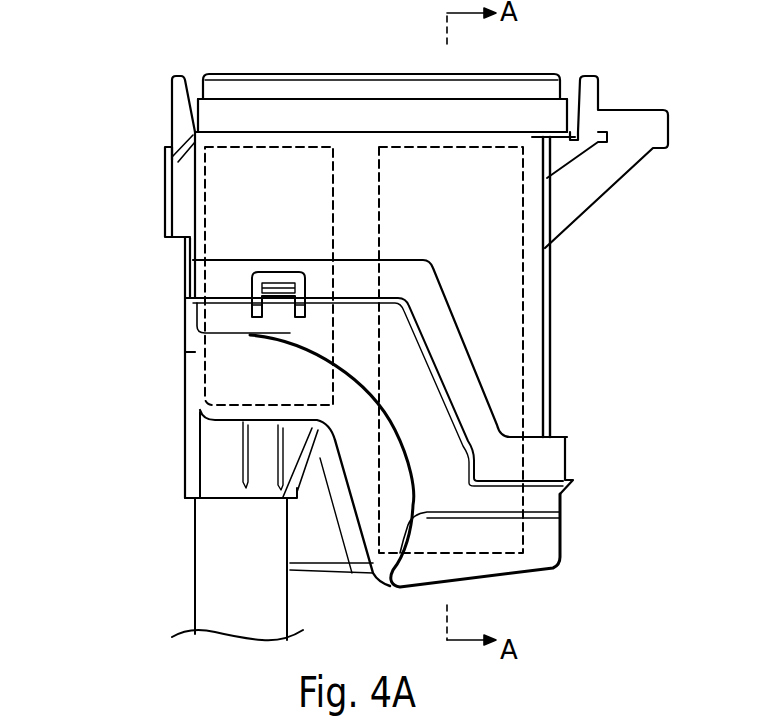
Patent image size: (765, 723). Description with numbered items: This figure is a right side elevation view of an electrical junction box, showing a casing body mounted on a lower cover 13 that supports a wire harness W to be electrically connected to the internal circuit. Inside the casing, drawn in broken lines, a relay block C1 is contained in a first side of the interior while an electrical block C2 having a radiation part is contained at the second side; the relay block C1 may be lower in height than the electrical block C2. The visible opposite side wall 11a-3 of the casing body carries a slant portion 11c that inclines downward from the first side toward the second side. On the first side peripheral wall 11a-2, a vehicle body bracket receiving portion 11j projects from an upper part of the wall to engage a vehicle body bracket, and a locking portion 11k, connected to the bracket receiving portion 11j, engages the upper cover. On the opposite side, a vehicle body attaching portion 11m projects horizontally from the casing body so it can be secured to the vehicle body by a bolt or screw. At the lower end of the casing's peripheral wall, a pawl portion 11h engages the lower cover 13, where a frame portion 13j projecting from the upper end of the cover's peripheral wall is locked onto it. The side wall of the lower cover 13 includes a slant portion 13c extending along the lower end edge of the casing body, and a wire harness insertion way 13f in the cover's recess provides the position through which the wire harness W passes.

The locking portion 11k is at (173, 104).
The vehicle body bracket receiving portion 11j is at (177, 203).
The relay block C1 is at (205, 172).
The first side peripheral wall 11a-2 is at (180, 248).
The slant portion 11c is at (475, 420).
The pawl portion 11h is at (277, 300).
The frame portion 13j is at (257, 296).
The opposite side wall 11a-3 is at (545, 252).
The vehicle body attaching portion 11m is at (598, 173).
The electrical block C2 is at (535, 198).
The lower cover 13 is at (540, 545).
The wire harness insertion way 13f is at (220, 463).
The slant portion 13c is at (358, 527).
The wire harness W is at (217, 582).